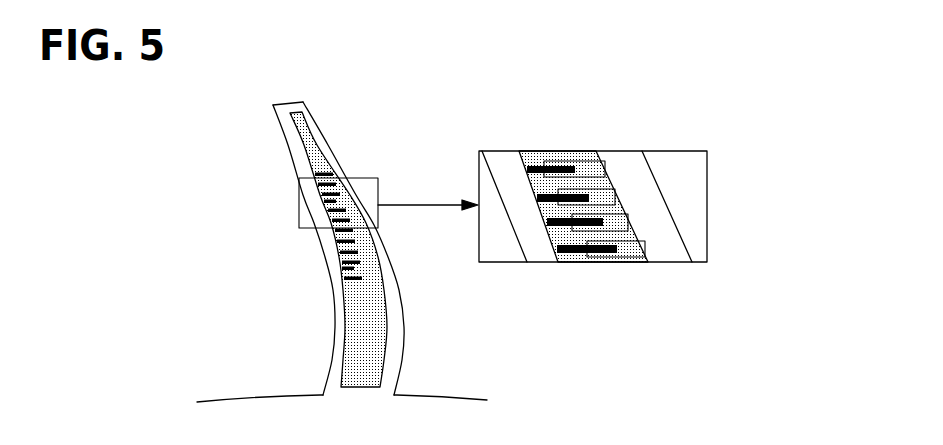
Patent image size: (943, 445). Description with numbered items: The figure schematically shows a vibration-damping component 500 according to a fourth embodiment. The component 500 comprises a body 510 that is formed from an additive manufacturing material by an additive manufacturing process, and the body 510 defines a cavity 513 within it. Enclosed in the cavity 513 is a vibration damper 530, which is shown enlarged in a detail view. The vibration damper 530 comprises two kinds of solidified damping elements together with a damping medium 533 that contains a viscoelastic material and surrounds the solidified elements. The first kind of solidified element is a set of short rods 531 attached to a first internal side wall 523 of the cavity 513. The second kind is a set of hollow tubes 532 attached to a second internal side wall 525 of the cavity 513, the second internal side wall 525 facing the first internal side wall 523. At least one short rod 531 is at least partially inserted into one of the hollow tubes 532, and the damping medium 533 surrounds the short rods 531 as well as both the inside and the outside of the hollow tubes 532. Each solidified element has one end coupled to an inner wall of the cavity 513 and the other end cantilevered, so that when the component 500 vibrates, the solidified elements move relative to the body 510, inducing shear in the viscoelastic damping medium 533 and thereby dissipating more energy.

The vibration-damping component 500 is at (435, 57).
The body 510 is at (292, 155).
The cavity 513 is at (358, 310).
The first internal side wall 523 is at (330, 238).
The second internal side wall 525 is at (365, 233).
The vibration damper 530 is at (772, 152).
The short rods 531 is at (590, 197).
The hollow tubes 532 is at (617, 212).
The damping medium 533 is at (627, 233).